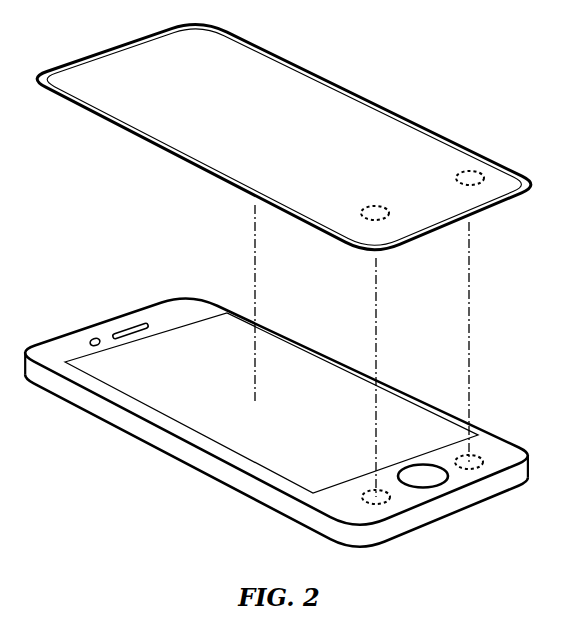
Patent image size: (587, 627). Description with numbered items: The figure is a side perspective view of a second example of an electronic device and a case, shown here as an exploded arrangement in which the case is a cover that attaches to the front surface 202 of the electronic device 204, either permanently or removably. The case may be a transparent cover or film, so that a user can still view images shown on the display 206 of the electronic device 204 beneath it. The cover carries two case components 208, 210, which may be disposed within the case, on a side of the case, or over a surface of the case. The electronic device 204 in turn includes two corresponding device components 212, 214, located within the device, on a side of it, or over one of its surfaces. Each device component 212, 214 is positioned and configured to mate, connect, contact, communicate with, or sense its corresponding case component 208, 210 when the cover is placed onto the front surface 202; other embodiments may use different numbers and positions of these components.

The front surface 202 is at (426, 124).
The electronic device 204 is at (202, 297).
The display 206 is at (307, 362).
The case component 208 is at (364, 208).
The case component 210 is at (459, 172).
The device component 212 is at (364, 493).
The device component 214 is at (457, 459).